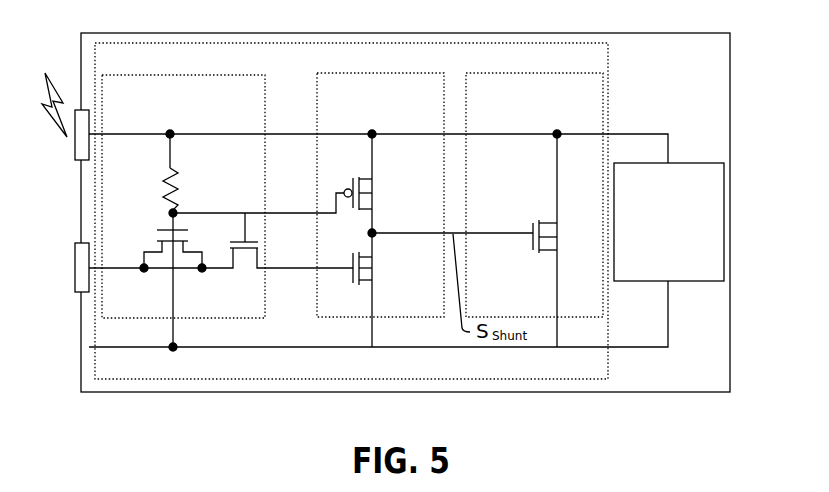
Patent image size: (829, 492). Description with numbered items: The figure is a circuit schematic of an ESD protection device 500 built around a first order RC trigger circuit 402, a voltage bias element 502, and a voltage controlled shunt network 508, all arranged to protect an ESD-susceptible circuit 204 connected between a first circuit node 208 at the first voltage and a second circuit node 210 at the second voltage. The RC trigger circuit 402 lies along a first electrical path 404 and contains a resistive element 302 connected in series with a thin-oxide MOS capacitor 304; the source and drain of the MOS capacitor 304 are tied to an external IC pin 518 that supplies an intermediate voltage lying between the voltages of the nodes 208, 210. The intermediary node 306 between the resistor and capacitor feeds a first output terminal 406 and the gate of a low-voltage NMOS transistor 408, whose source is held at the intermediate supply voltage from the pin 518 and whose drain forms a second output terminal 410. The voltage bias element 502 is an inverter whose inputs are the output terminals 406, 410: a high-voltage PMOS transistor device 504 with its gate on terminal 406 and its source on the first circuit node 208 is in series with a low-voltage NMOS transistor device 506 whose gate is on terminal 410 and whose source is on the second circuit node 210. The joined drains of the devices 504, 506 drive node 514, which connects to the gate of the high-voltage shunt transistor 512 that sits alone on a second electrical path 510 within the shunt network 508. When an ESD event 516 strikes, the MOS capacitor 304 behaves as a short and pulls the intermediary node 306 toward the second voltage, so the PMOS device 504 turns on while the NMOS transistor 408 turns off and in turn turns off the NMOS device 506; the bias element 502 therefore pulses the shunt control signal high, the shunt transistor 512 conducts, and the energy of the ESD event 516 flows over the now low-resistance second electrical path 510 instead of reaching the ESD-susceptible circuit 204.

The ESD protection device 500 is at (460, 68).
The first order RC trigger circuit 402 is at (250, 109).
The voltage bias element 502 is at (431, 123).
The voltage controlled shunt network 508 is at (549, 121).
The ESD-susceptible circuit 204 is at (654, 263).
The ESD event 516 is at (52, 67).
The external IC pin 518 is at (75, 243).
The first circuit node 208 is at (633, 133).
The second circuit node 210 is at (642, 348).
The first electrical path 404 is at (168, 156).
The resistive element 302 is at (181, 170).
The intermediary node 306 is at (195, 212).
The thin-oxide MOS capacitor 304 is at (154, 222).
The low-voltage NMOS transistor 408 is at (244, 275).
The first output terminal 406 is at (268, 212).
The second output terminal 410 is at (268, 267).
The high-voltage PMOS transistor device 504 is at (381, 178).
The low-voltage NMOS transistor device 506 is at (382, 276).
The node 514 is at (512, 232).
The second electrical path 510 is at (556, 158).
The high-voltage shunt transistor 512 is at (534, 268).